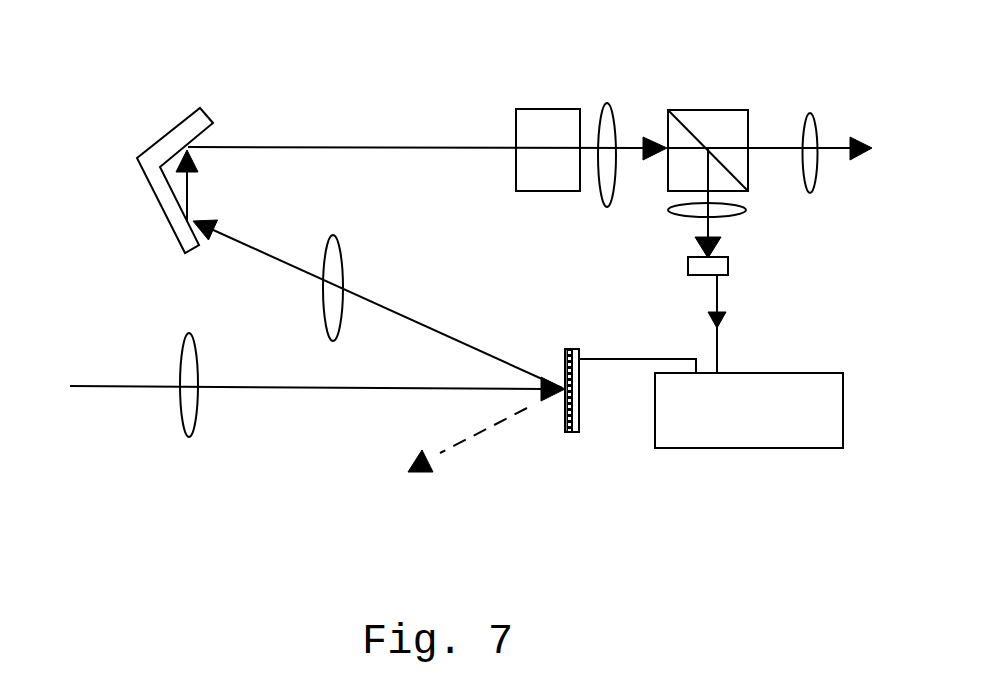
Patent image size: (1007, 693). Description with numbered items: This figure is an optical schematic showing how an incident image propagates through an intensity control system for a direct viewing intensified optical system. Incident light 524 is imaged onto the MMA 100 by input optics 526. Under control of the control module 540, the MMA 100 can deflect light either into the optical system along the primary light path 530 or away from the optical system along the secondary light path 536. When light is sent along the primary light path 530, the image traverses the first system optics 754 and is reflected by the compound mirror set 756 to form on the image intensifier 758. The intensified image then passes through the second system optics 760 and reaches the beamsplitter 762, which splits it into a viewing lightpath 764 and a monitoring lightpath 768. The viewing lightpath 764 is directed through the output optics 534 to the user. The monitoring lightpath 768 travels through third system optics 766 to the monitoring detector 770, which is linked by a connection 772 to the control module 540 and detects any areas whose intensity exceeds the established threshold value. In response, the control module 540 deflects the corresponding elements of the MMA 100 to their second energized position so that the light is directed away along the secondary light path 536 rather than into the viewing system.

The MMA 100 is at (572, 425).
The incident light 524 is at (88, 385).
The input optics 526 is at (189, 425).
The primary light path 530 is at (477, 348).
The output optics 534 is at (812, 127).
The secondary light path 536 is at (477, 433).
The control module 540 is at (727, 437).
The first system optics 754 is at (333, 253).
The compound mirror set 756 is at (165, 203).
The image intensifier 758 is at (548, 123).
The second system optics 760 is at (607, 104).
The beamsplitter 762 is at (725, 132).
The viewing lightpath 764 is at (775, 148).
The lens 766 is at (730, 210).
The monitoring lightpath 768 is at (708, 223).
The monitoring detector 770 is at (720, 267).
The link 772 is at (722, 327).